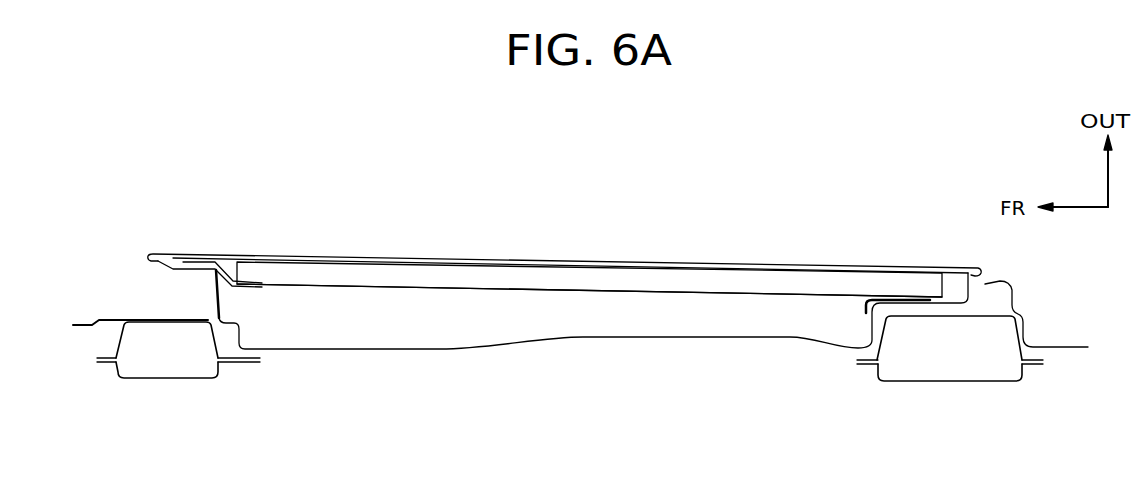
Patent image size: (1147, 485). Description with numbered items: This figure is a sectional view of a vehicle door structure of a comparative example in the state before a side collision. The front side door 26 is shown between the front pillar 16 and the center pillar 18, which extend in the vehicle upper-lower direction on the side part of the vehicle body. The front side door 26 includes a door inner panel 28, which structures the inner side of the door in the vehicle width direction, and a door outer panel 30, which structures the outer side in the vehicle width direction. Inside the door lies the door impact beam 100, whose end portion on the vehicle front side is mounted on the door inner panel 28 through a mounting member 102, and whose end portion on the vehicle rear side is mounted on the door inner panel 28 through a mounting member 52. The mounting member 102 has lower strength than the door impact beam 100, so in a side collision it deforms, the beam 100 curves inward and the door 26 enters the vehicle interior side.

The front pillar 16 is at (112, 336).
The center pillar 18 is at (950, 392).
The front side door 26 is at (686, 256).
The door inner panel 28 is at (410, 352).
The door outer panel 30 is at (417, 257).
The mounting member 52 is at (897, 300).
The door impact beam 100 is at (568, 296).
The mounting member 102 is at (195, 262).